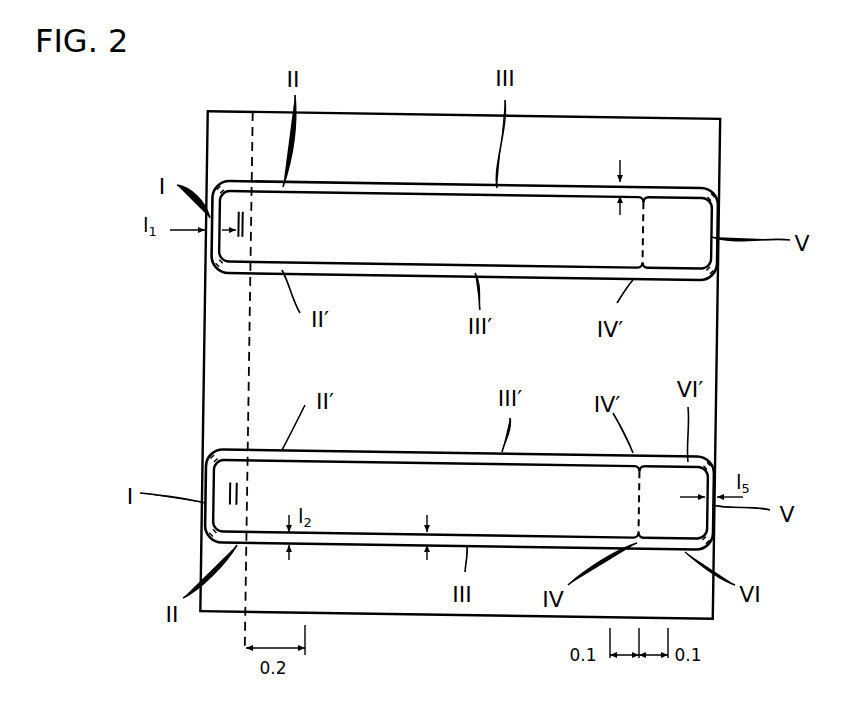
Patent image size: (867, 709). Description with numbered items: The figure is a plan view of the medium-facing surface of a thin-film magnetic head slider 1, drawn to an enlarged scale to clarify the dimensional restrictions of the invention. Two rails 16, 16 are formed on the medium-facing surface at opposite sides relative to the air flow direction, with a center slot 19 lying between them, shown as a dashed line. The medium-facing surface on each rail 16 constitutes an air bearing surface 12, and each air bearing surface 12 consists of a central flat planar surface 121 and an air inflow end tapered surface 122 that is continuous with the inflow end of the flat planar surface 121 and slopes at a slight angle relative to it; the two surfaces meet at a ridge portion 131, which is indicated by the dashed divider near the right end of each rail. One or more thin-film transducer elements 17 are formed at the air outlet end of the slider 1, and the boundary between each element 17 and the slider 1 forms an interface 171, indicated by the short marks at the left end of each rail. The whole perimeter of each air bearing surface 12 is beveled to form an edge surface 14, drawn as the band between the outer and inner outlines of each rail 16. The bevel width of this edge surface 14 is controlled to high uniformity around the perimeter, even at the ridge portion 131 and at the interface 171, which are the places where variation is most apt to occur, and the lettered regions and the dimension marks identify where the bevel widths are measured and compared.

The slider 1 is at (557, 175).
The air bearing surface 12 is at (407, 198).
The flat planar surface 121 is at (598, 213).
The tapered surface 122 is at (682, 247).
The ridge portion 131 is at (677, 218).
The edge surface 14 is at (682, 190).
The rail 16 is at (262, 277).
The thin-film transducer element 17 is at (228, 251).
The interface 171 is at (247, 508).
The center slot 19 is at (250, 355).